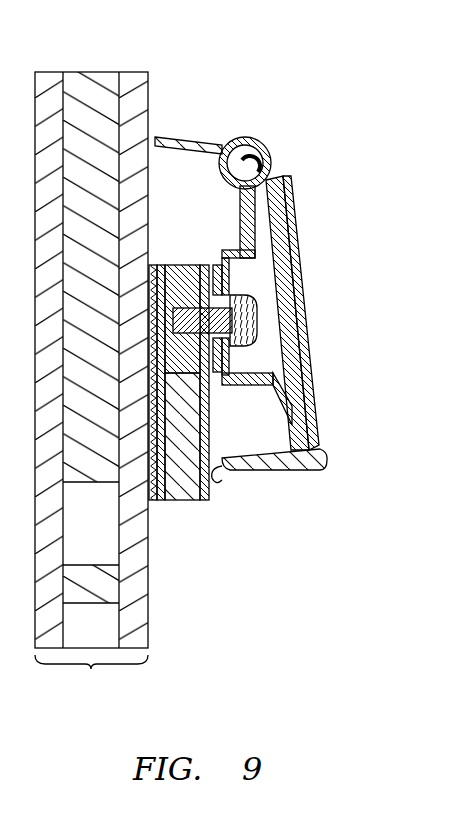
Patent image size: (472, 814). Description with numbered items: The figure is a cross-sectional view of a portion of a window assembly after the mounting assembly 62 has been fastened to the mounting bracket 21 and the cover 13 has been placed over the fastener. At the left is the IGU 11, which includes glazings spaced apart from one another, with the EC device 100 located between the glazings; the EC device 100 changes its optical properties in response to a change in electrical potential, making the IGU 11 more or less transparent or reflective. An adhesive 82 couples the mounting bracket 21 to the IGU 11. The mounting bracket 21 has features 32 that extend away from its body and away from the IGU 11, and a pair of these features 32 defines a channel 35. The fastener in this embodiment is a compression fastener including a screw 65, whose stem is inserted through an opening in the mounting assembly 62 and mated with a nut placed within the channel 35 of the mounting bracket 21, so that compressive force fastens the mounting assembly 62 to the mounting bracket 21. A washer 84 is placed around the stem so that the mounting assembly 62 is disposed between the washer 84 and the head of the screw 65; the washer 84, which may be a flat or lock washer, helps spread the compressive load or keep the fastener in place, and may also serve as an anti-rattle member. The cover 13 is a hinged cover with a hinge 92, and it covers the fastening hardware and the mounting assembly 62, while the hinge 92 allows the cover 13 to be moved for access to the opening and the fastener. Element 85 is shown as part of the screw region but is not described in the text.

The EC device 100 is at (80, 77).
The IGU 11 is at (91, 679).
The cover 13 is at (326, 312).
The mounting bracket 21 is at (166, 266).
The features 32 is at (211, 498).
The channel 35 is at (179, 498).
The mounting assembly 62 is at (183, 140).
The screw 65 is at (250, 299).
The adhesive 82 is at (153, 500).
The washer 84 is at (216, 378).
The screw 85 is at (256, 328).
The hinge 92 is at (290, 132).